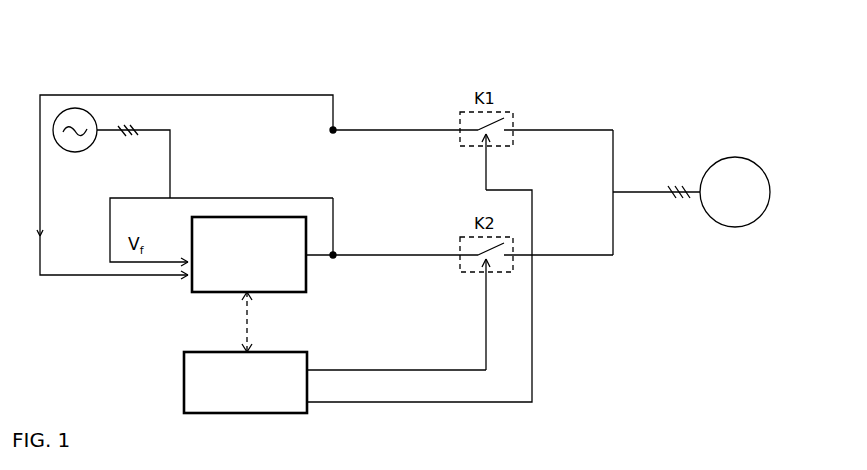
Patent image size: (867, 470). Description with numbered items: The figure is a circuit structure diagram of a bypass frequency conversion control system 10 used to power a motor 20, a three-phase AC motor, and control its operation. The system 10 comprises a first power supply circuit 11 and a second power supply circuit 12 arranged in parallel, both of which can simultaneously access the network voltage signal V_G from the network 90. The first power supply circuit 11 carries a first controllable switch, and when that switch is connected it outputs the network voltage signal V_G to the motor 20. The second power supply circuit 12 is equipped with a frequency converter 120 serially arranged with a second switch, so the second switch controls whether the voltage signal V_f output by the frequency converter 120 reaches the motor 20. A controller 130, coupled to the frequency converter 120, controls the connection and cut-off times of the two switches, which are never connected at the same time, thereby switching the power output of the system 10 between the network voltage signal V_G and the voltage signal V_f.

The bypass frequency conversion control system 10 is at (184, 70).
The first power supply circuit 11 is at (380, 127).
The second power supply circuit 12 is at (372, 253).
The motor 20 is at (735, 157).
The network 90 is at (77, 154).
The frequency converter 120 is at (306, 264).
The controller 130 is at (298, 350).